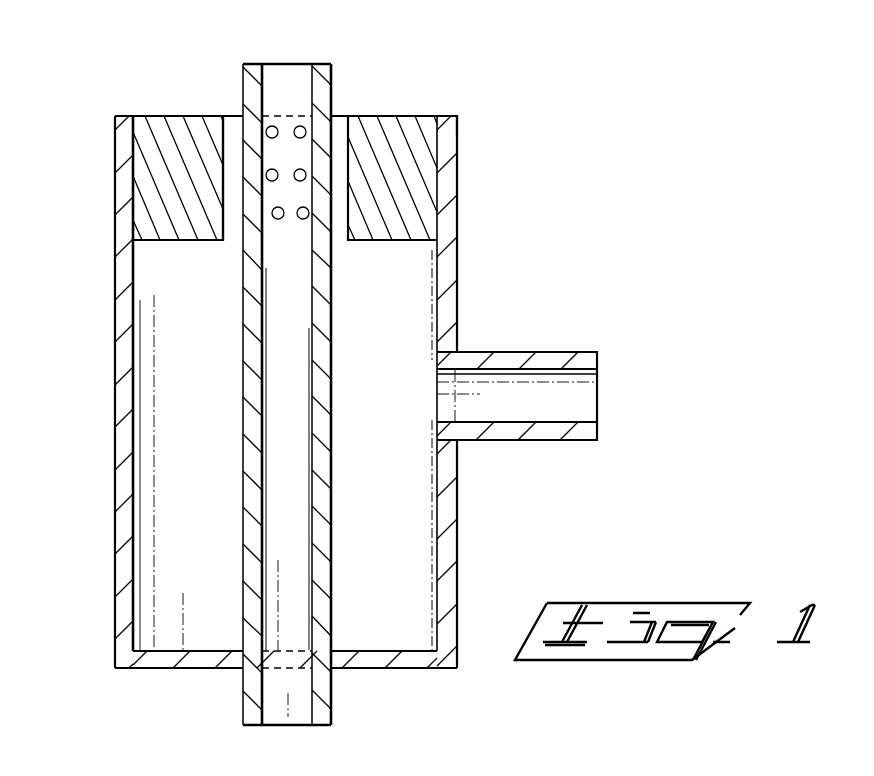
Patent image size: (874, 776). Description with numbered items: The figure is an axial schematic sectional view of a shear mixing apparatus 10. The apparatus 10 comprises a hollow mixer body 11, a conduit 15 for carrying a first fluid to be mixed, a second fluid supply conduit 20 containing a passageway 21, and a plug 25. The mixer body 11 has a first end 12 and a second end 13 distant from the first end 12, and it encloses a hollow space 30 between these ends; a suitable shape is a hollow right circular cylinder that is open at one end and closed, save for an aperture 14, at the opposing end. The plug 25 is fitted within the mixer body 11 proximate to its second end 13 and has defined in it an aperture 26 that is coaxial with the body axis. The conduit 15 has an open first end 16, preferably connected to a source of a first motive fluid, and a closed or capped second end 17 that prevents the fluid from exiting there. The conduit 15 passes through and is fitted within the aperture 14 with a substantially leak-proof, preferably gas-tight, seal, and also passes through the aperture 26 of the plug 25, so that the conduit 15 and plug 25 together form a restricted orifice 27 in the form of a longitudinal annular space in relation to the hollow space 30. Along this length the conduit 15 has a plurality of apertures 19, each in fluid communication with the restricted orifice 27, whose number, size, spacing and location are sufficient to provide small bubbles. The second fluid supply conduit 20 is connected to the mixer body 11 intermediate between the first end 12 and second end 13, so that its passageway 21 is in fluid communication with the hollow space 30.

The shear mixing apparatus 10 is at (548, 271).
The hollow mixer body 11 is at (445, 532).
The first end of mixer body 12 is at (380, 662).
The second end of mixer body 13 is at (437, 117).
The aperture 14 is at (243, 657).
The conduit 15 is at (242, 478).
The first end of conduit 16 is at (317, 727).
The second end of conduit 17 is at (243, 63).
The apertures 19 is at (306, 177).
The second fluid supply conduit 20 is at (492, 351).
The passageway 21 is at (552, 402).
The plug 25 is at (385, 115).
The aperture 26 is at (223, 174).
The restricted orifice 27 is at (232, 191).
The hollow space 30 is at (185, 337).